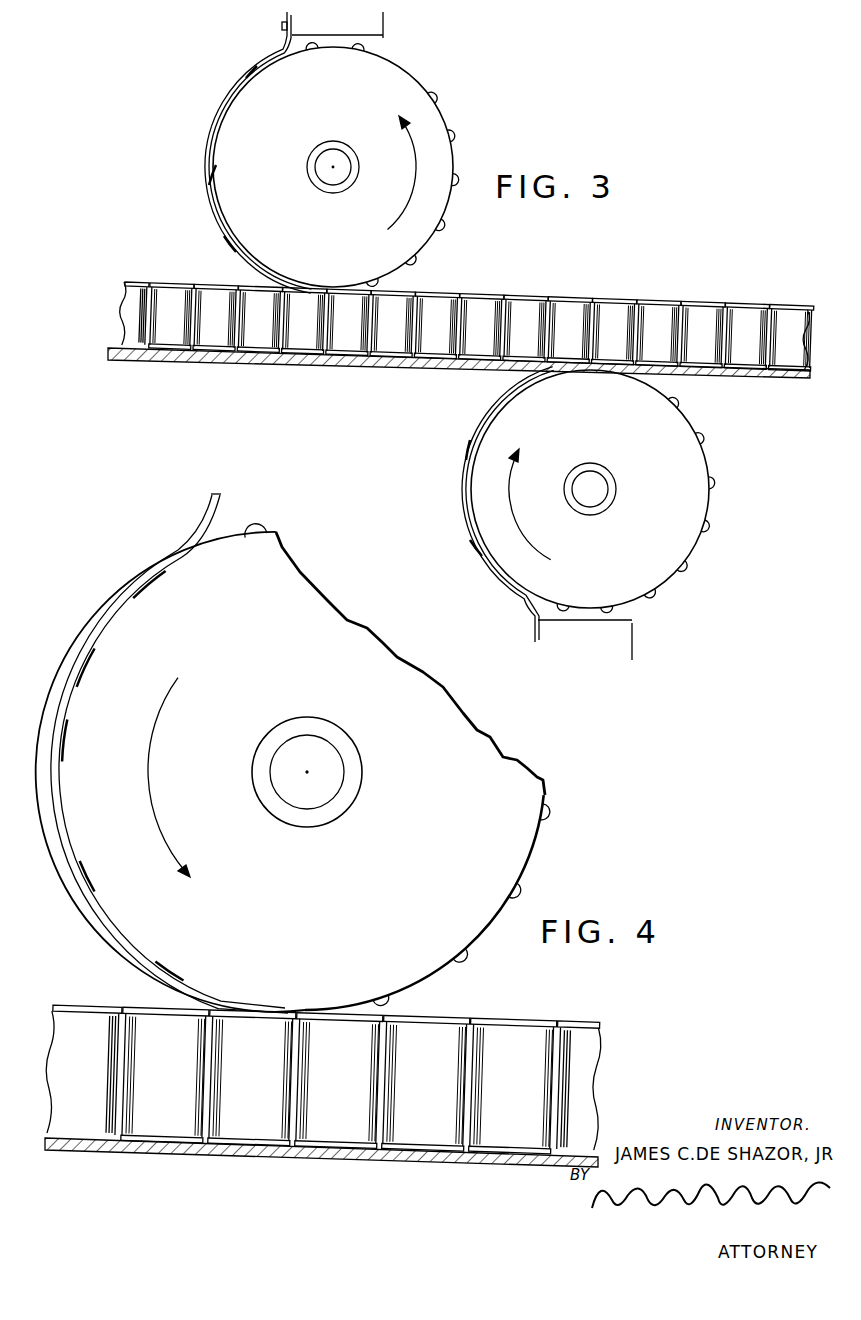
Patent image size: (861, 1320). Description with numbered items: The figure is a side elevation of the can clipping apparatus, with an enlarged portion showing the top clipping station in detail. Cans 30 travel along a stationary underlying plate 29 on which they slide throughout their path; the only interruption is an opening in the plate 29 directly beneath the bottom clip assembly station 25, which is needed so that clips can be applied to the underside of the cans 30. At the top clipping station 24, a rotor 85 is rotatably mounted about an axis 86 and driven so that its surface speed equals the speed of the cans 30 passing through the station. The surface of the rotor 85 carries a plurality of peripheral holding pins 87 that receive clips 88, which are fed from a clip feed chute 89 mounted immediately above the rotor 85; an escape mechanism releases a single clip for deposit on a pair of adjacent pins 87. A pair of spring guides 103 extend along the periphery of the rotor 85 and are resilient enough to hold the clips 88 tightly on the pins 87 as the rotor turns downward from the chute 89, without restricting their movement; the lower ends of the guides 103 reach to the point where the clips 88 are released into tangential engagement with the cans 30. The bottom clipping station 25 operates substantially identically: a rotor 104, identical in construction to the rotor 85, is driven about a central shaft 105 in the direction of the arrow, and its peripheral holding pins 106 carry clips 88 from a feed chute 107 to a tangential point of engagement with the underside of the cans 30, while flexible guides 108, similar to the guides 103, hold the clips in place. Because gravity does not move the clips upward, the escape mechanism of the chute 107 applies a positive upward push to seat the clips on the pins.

In FIG. 3, the top clipping station 24 is at (195, 128).
In FIG. 3, the bottom clip assembly station 25 is at (719, 457).
In FIG. 3, the underlying plate 29 is at (293, 358).
In FIG. 4, the underlying plate 29 is at (350, 1160).
In FIG. 3, the cans 30 is at (521, 312).
In FIG. 4, the cans 30 is at (418, 1050).
In FIG. 3, the rotor 85 is at (392, 95).
In FIG. 4, the rotor 85 is at (505, 793).
In FIG. 3, the axis 86 is at (330, 158).
In FIG. 4, the axis 86 is at (318, 768).
In FIG. 3, the peripheral holding pins 87 is at (452, 135).
In FIG. 4, the peripheral holding pins 87 is at (522, 890).
In FIG. 3, the clips 88 is at (253, 72).
In FIG. 4, the clips 88 is at (143, 590).
In FIG. 3, the clip feed chute 89 is at (366, 22).
In FIG. 3, the spring guides 103 is at (214, 113).
In FIG. 4, the spring guides 103 is at (158, 972).
In FIG. 3, the rotor 104 is at (682, 527).
In FIG. 3, the central shaft 105 is at (600, 489).
In FIG. 3, the peripheral holding pins 106 is at (697, 452).
In FIG. 3, the feed chute 107 is at (620, 637).
In FIG. 3, the flexible guides 108 is at (474, 543).